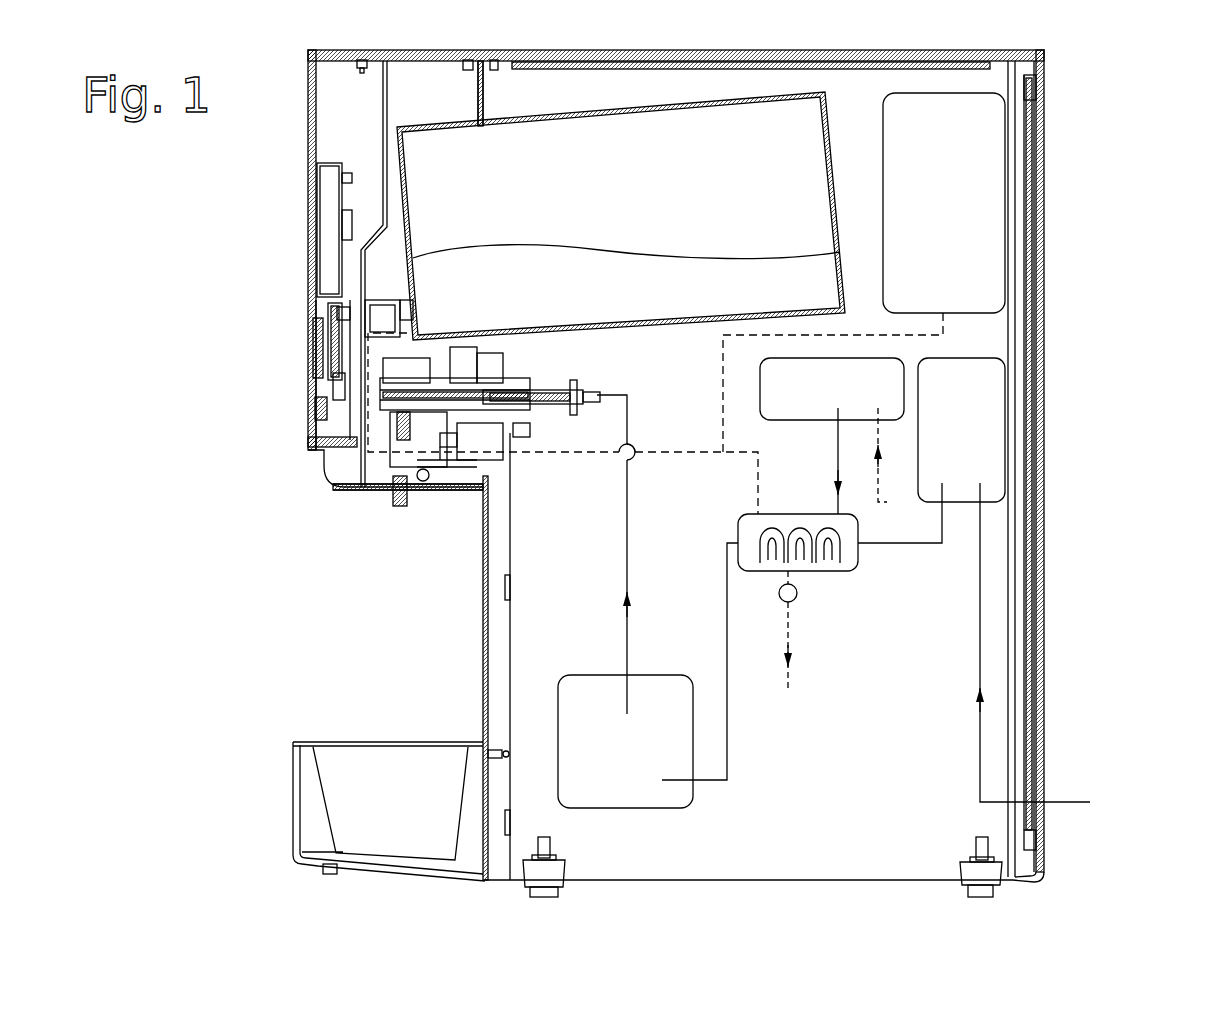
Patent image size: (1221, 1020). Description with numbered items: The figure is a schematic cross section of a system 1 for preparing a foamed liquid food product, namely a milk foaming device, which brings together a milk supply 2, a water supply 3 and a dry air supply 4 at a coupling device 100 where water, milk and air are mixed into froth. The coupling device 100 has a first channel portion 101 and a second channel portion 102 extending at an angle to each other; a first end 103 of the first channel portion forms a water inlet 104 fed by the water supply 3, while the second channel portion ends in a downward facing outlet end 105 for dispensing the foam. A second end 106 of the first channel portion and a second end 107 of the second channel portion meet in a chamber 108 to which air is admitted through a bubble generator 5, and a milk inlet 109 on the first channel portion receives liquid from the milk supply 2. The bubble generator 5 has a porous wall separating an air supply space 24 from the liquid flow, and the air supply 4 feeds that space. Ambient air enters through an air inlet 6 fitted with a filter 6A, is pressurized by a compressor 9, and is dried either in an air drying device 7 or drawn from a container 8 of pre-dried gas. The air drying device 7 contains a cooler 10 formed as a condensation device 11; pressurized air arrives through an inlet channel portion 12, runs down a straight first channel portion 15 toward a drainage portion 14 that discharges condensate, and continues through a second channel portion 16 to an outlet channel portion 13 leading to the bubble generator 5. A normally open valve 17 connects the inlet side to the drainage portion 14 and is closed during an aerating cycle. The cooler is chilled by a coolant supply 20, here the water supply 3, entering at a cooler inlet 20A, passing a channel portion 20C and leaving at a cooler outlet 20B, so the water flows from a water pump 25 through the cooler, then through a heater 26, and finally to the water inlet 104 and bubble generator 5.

The system 1 is at (1078, 229).
The milk supply 2 is at (487, 172).
The water supply 3 is at (627, 542).
The air supply 4 is at (886, 473).
The bubble generator 5 is at (398, 408).
The air inlet 6 is at (1001, 514).
The filter 6A is at (890, 506).
The air drying device 7 is at (873, 580).
The container 8 is at (969, 138).
The compressor 9 is at (773, 380).
The cooler 10 is at (810, 518).
The condensation device 11 is at (787, 518).
The inlet channel portion 12 is at (855, 518).
The outlet channel portion 13 is at (758, 518).
The drainage portion 14 is at (792, 578).
The first channel portion 15 is at (833, 575).
The second channel portion 16 is at (750, 557).
The valve 17 is at (780, 578).
The coolant supply 20 is at (1062, 818).
The cooler inlet 20A is at (870, 553).
The cooler outlet 20B is at (730, 535).
The channel portion 20C is at (763, 543).
The air supply space 24 is at (395, 398).
The water pump 25 is at (985, 390).
The heater 26 is at (582, 708).
The coupling device 100 is at (467, 418).
The first channel portion 101 is at (452, 360).
The second channel portion 102 is at (398, 418).
The first end 103 is at (490, 403).
The water inlet 104 is at (600, 396).
The outlet end 105 is at (400, 505).
The second end 106 is at (407, 378).
The second end 107 is at (405, 438).
The chamber 108 is at (400, 428).
The milk inlet 109 is at (467, 358).